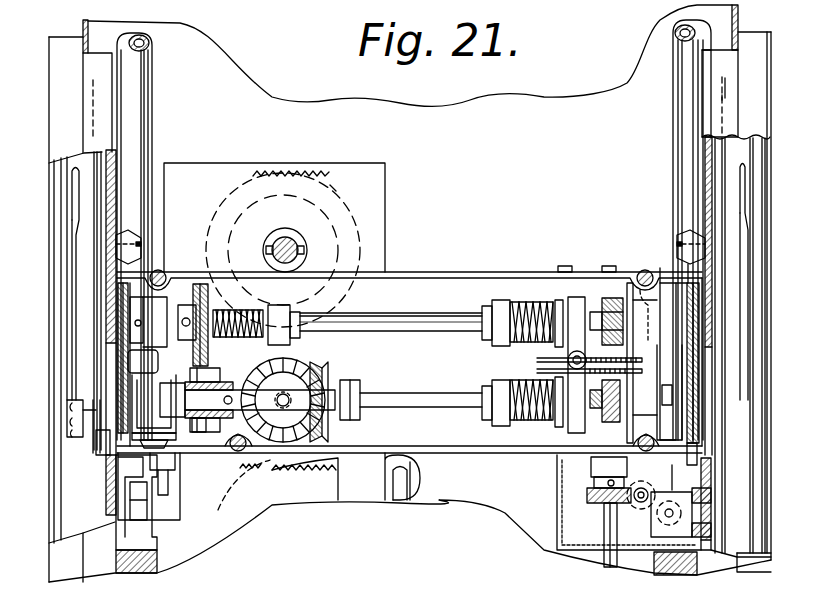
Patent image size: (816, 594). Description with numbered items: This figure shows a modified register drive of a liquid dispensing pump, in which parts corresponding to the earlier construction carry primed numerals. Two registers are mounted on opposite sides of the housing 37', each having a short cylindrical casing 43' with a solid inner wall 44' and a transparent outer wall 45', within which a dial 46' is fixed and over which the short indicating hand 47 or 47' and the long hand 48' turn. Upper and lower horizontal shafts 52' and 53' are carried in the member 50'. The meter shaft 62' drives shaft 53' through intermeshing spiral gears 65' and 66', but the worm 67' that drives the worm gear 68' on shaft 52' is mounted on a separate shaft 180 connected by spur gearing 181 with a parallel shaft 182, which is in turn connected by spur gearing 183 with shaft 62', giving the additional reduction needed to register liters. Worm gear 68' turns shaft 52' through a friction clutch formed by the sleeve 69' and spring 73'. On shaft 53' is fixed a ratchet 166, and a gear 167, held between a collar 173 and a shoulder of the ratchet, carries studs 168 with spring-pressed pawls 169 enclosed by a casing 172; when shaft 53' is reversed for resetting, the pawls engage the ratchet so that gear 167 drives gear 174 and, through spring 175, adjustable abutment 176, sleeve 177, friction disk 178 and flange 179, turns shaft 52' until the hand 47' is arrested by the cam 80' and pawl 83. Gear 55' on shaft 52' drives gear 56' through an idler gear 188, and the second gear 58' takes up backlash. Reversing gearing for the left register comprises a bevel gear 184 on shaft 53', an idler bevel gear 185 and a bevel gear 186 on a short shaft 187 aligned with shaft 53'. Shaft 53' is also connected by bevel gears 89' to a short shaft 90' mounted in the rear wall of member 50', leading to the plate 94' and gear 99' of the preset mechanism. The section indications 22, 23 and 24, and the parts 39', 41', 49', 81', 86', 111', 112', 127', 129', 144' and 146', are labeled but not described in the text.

The section line 22 is at (636, 296).
The section line 23 is at (788, 360).
The meter 24 is at (322, 345).
The housing 37' is at (558, 86).
The guide tube 39' is at (414, 230).
The base block 41' is at (148, 569).
The cylindrical casing 43' is at (392, 79).
The inner wall 44' is at (409, 294).
The outer wall 45' is at (403, 307).
The dial 46' is at (404, 344).
The indicating hand 47 is at (757, 95).
The indicating hand 47' is at (55, 301).
The long hand 48' is at (403, 345).
The bearing block 49' is at (161, 504).
The member 50' is at (409, 347).
The upper shaft 52' is at (391, 304).
The lower shaft 53' is at (411, 409).
The gear 55' is at (404, 363).
The gear 56' is at (382, 450).
The second gear 58' is at (410, 255).
The meter shaft 62' is at (629, 515).
The spiral gear 65' is at (540, 412).
The spiral gear 66' is at (609, 512).
The worm 67' is at (644, 295).
The worm gear 68' is at (600, 292).
The sleeve 69' is at (484, 355).
The spring 73' is at (530, 313).
The cam 80' is at (705, 384).
The pinion 81' is at (623, 401).
The pawl 83 is at (643, 363).
The support 86' is at (731, 515).
The bevel gears 89' is at (336, 394).
The short shaft 90' is at (283, 400).
The plate 94' is at (291, 217).
The gear 99' is at (305, 479).
The gear 111' is at (283, 235).
The key 112' is at (306, 243).
The hub 127' is at (292, 232).
The collar 129' is at (269, 237).
The bracket 144' is at (420, 476).
The pin 146' is at (371, 484).
The ratchet 166 is at (259, 400).
The gear 167 is at (200, 440).
The studs 168 is at (198, 378).
The pawls 169 is at (322, 357).
The casing 172 is at (236, 455).
The collar 173 is at (198, 455).
The gear 174 is at (207, 285).
The spring 175 is at (252, 310).
The adjustable abutment 176 is at (284, 315).
The sleeve 177 is at (300, 318).
The friction disk 178 is at (238, 312).
The flange 179 is at (184, 310).
The shaft 180 is at (608, 268).
The spur gearing 181 is at (568, 357).
The parallel shaft 182 is at (563, 268).
The spur gearing 183 is at (520, 372).
The bevel gear 184 is at (154, 404).
The idler bevel gear 185 is at (154, 426).
The bevel gear 186 is at (106, 455).
The short shaft 187 is at (88, 408).
The idler gear 188 is at (143, 361).